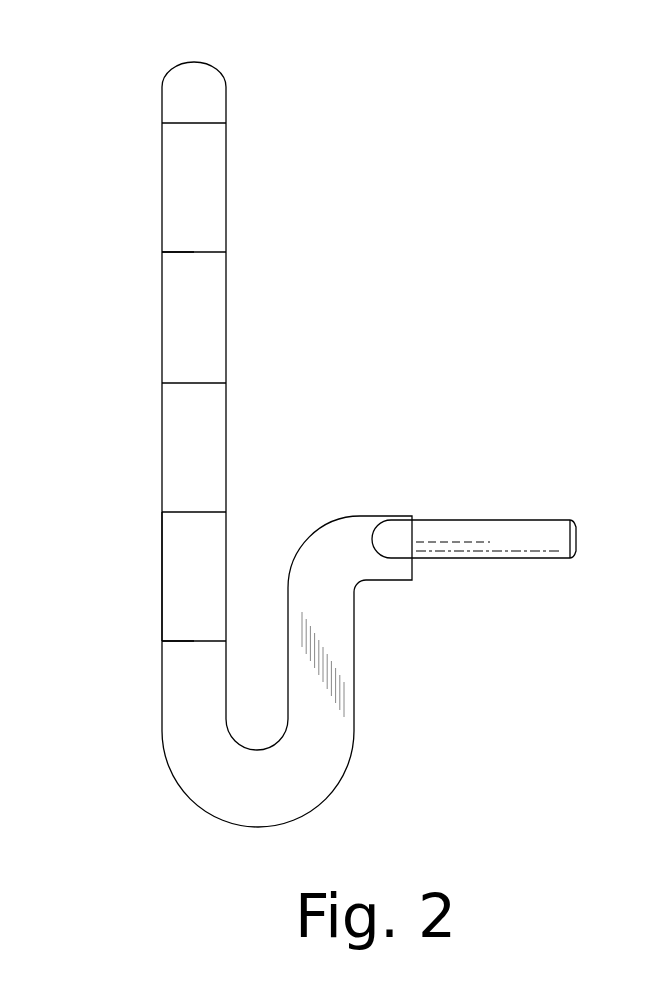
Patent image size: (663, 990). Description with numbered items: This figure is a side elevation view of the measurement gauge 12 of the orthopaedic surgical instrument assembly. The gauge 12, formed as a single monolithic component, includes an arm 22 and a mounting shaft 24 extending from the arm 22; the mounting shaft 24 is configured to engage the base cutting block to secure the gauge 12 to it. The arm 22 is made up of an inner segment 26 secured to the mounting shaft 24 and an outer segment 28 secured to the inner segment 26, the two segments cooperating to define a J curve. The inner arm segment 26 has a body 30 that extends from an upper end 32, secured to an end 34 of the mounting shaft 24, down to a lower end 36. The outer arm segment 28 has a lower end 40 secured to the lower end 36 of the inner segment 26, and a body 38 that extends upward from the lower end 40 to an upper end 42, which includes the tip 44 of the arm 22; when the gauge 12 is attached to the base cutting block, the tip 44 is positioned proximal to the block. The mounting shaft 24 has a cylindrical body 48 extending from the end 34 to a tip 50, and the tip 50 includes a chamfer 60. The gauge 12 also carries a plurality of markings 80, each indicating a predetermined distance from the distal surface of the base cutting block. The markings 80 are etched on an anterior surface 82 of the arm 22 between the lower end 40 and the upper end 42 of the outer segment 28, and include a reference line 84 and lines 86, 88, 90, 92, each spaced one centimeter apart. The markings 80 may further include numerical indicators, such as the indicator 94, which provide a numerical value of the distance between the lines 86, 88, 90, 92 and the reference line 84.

The measurement gauge 12 is at (466, 208).
The arm 22 is at (108, 351).
The mounting shaft 24 is at (526, 474).
The inner segment 26 is at (347, 648).
The outer segment 28 is at (167, 718).
The body 30 is at (347, 606).
The upper end 32 is at (360, 515).
The end 34 is at (447, 520).
The lower end 36 is at (310, 800).
The body 38 is at (168, 441).
The lower end 40 is at (200, 795).
The upper end 42 is at (216, 93).
The tip 44 is at (190, 60).
The cylindrical body 48 is at (487, 558).
The tip 50 is at (577, 522).
The chamfer 60 is at (577, 556).
The markings 80 is at (178, 252).
The anterior surface 82 is at (175, 552).
The reference line 84 is at (210, 641).
The line 86 is at (210, 512).
The line 88 is at (210, 383).
The line 90 is at (210, 252).
The line 92 is at (212, 124).
The numerical indicator 94 is at (195, 475).